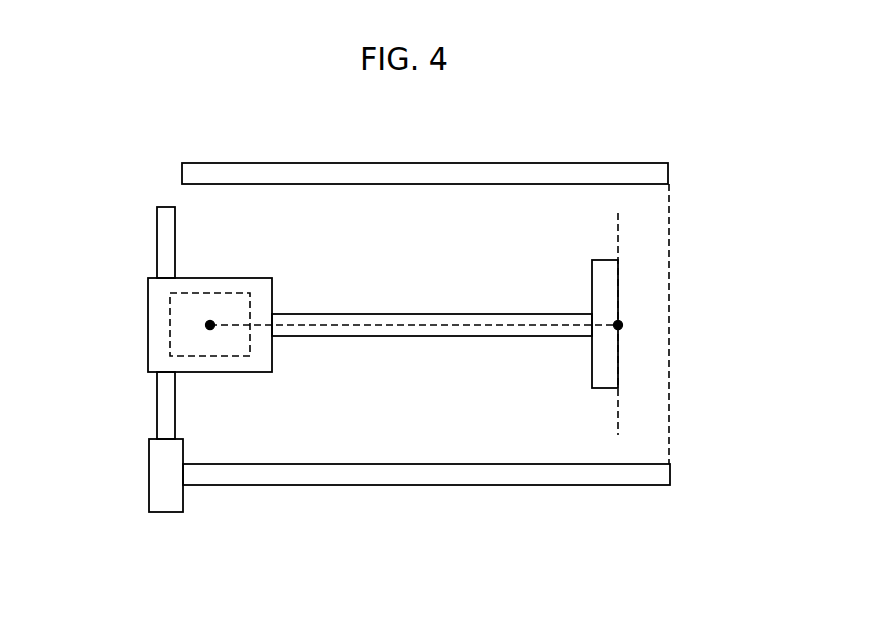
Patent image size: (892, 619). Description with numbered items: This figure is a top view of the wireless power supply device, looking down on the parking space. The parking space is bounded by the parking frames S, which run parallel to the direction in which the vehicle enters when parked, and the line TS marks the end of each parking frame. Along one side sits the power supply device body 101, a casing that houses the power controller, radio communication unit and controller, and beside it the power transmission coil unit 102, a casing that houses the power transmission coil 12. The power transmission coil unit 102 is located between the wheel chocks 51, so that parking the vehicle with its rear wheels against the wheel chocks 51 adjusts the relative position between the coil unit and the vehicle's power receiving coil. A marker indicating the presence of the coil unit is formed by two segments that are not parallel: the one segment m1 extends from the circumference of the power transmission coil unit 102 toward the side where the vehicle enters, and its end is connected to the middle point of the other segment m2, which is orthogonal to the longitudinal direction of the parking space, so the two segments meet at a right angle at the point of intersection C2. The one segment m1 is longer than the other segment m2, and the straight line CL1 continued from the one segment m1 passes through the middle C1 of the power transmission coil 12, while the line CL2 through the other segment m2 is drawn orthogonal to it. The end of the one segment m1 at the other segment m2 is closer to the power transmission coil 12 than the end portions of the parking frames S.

The parking frames S is at (383, 169).
The substrate end face reference line TS is at (668, 173).
The wheel chocks 51 is at (158, 234).
The power transmission coil unit 102 is at (148, 343).
The power transmission coil 12 is at (170, 315).
The power supply device body 101 is at (149, 467).
The one segment m1 is at (400, 336).
The other segment m2 is at (613, 370).
The straight line CL1 is at (511, 328).
The second center line CL2 is at (617, 232).
The middle of the power transmission coil C1 is at (211, 322).
The point of intersection C2 is at (620, 324).